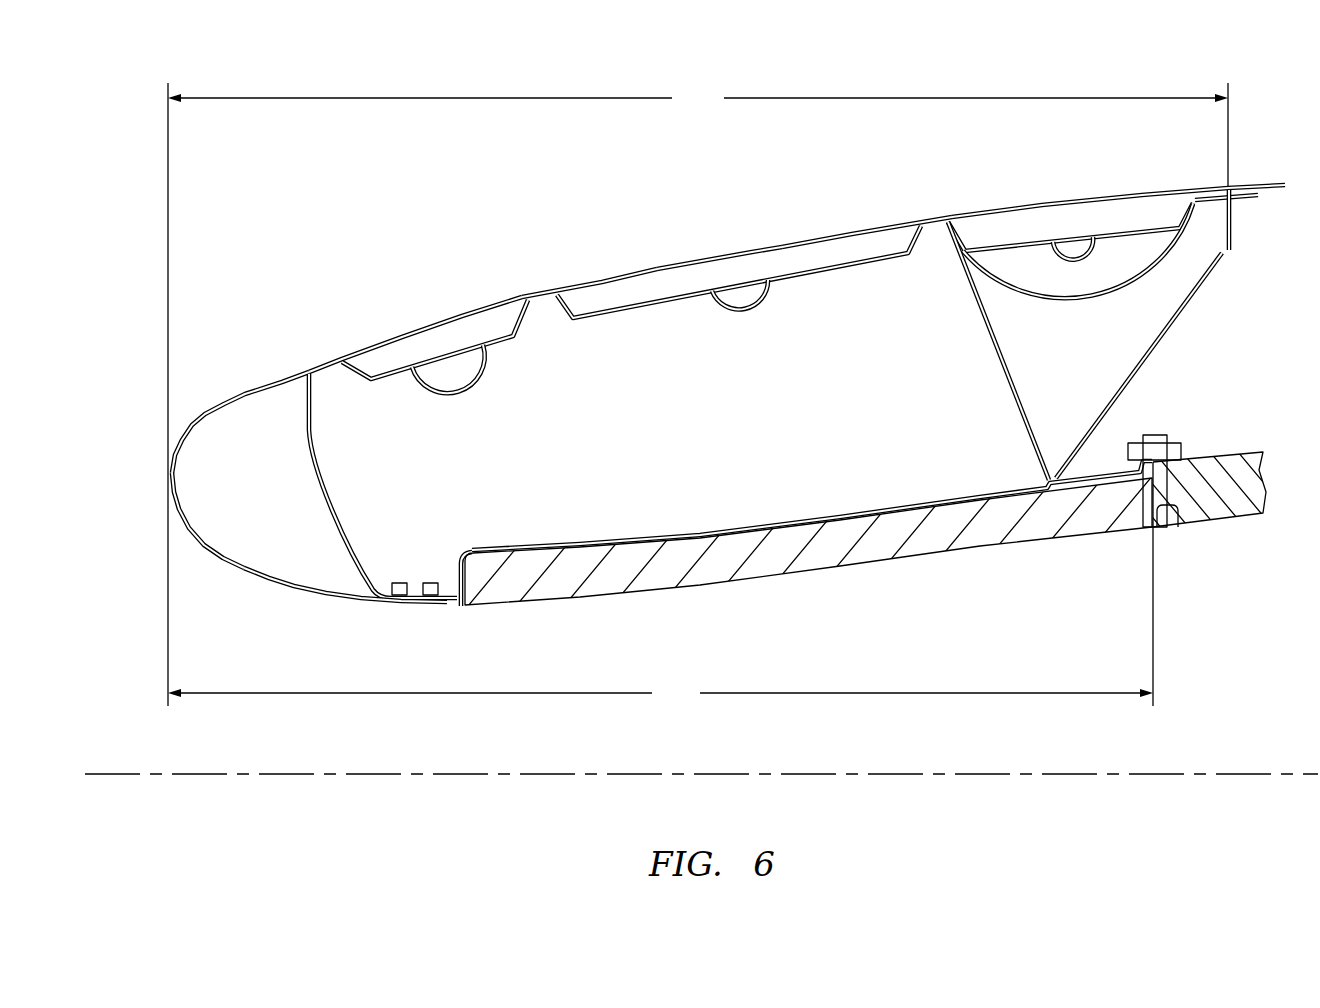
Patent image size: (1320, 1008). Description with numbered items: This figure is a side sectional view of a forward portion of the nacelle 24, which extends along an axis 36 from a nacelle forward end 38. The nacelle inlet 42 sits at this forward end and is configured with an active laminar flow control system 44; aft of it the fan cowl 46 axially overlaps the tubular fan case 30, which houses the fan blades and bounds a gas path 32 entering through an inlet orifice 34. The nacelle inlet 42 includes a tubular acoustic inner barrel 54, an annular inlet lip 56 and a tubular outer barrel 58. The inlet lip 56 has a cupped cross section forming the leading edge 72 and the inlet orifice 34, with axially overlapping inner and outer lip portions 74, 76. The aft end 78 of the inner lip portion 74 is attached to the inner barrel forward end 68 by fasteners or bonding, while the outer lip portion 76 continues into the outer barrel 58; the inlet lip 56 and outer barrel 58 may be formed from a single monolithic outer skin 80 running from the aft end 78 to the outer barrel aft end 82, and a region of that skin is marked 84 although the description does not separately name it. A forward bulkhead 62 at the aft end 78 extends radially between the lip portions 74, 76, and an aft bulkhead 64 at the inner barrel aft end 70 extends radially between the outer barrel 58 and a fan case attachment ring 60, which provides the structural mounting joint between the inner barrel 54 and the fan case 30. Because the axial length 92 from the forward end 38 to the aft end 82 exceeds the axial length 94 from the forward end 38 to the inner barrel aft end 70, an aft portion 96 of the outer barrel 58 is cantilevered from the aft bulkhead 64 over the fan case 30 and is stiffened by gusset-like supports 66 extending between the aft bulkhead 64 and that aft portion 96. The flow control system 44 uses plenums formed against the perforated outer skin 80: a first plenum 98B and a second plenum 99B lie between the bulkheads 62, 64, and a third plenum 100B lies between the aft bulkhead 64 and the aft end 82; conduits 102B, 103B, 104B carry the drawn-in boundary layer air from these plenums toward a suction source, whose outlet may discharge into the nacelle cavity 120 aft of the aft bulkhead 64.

The nacelle 24 is at (307, 253).
The fan case 30 is at (1258, 515).
The gas path 32 is at (567, 667).
The inlet orifice 34 is at (265, 630).
The axis 36 is at (222, 777).
The nacelle forward end 38 is at (193, 483).
The leading edge 72 is at (170, 480).
The nacelle inlet 42 is at (433, 283).
The active laminar flow control system 44 is at (822, 307).
The fan cowl 46 is at (1268, 185).
The acoustic inner barrel 54 is at (803, 573).
The inlet lip 56 is at (222, 560).
The outer barrel 58 is at (845, 232).
The fan case attachment ring 60 is at (1090, 486).
The forward bulkhead 62 is at (340, 505).
The aft bulkhead 64 is at (1003, 368).
The outer barrel support 66 is at (1130, 355).
The inner barrel forward end 68 is at (412, 601).
The inner barrel aft end 70 is at (1162, 508).
The inner lip portion 74 is at (280, 588).
The outer lip portion 76 is at (225, 402).
The aft end of inner lip portion 78 is at (451, 607).
The monolithic outer skin 80 is at (590, 282).
The outer barrel aft end 82 is at (1232, 192).
The skin portion 84 is at (688, 258).
The axial length 92 is at (698, 394).
The axial length 94 is at (660, 584).
The aft portion of outer barrel 96 is at (1188, 193).
The first plenum 98B is at (388, 372).
The second plenum 99B is at (613, 305).
The third plenum 100B is at (1010, 237).
The conduit 102B is at (470, 378).
The conduit 103B is at (741, 303).
The conduit 104B is at (1073, 250).
The nacelle cavity 120 is at (1205, 337).